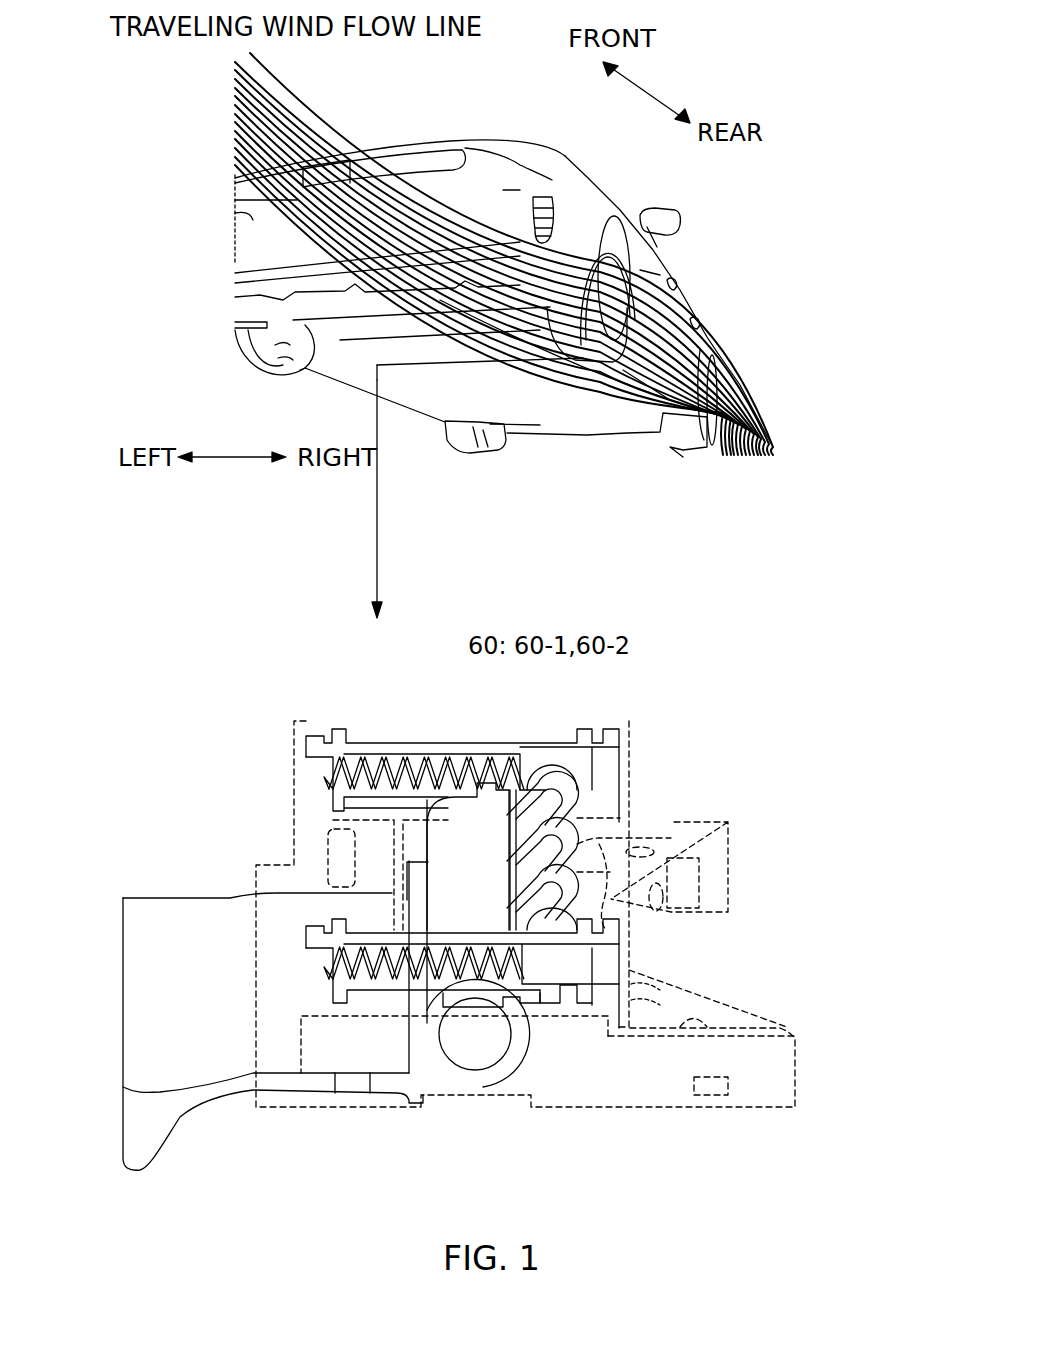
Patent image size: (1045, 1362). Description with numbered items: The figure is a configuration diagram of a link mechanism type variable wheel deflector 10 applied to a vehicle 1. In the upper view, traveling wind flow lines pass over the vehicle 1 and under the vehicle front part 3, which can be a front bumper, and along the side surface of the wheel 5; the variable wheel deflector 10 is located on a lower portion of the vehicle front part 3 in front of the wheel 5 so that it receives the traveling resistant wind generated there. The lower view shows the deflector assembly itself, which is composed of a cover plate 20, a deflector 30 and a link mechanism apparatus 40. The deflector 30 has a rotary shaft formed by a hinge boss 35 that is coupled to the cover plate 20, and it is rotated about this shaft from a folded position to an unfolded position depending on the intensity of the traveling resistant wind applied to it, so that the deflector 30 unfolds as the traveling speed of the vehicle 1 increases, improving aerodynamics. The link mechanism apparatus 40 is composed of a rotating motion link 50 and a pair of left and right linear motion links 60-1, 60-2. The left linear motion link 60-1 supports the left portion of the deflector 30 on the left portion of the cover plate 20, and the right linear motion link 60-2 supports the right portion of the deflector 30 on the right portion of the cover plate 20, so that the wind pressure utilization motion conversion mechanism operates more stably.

The vehicle 1 is at (452, 152).
The vehicle front part 3 is at (255, 221).
The wheel 5 is at (580, 350).
The variable wheel deflector 10 is at (235, 340).
The cover plate 20 is at (658, 1090).
The deflector 30 is at (148, 1115).
The hinge boss 35 is at (473, 1050).
The link mechanism apparatus 40 is at (870, 759).
The rotating motion link 50 is at (554, 811).
The left linear motion link 60-1 is at (581, 757).
The right linear motion link 60-2 is at (565, 966).